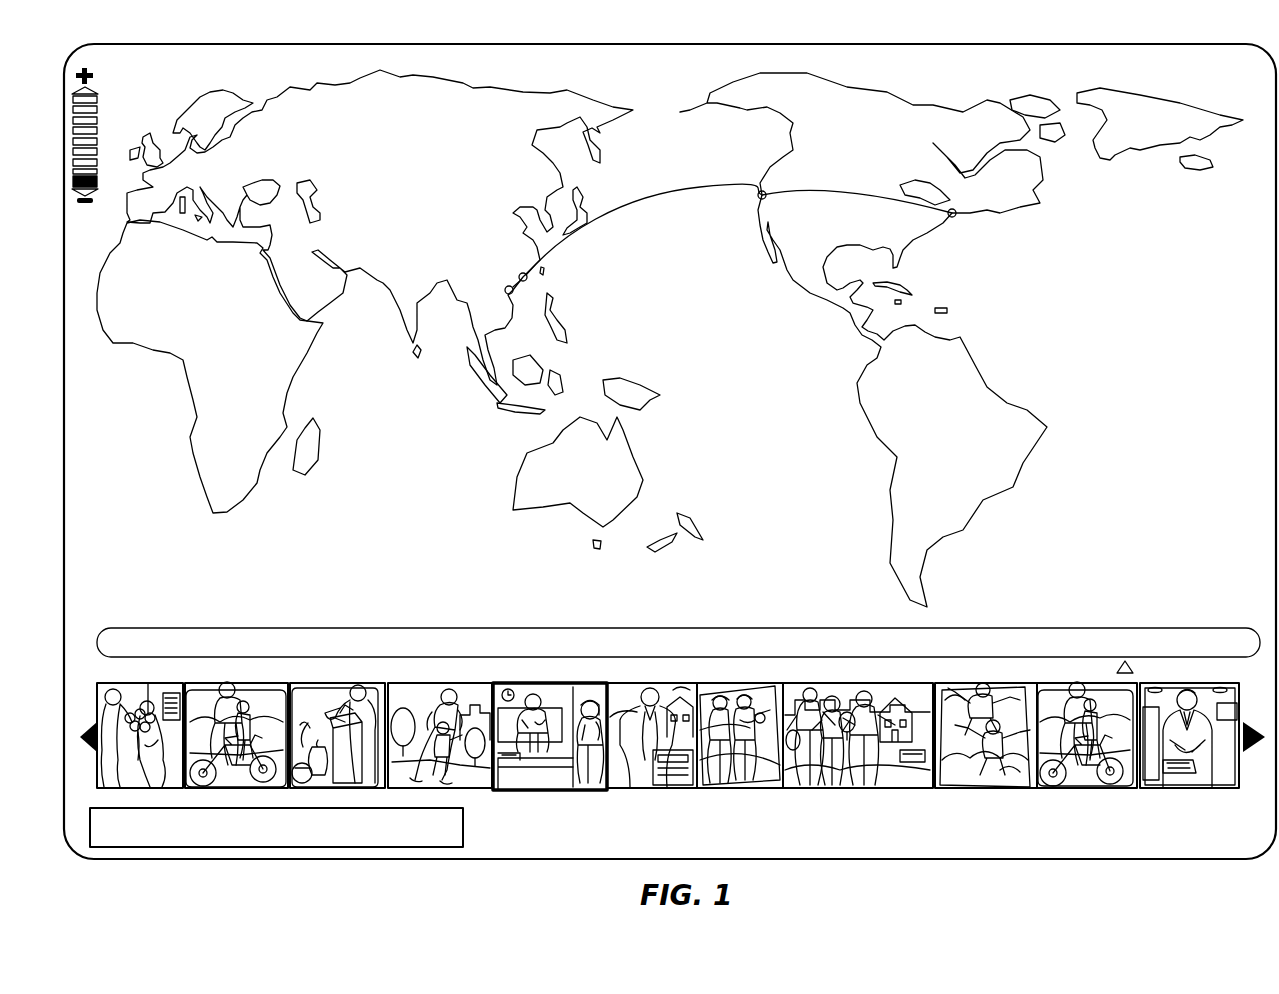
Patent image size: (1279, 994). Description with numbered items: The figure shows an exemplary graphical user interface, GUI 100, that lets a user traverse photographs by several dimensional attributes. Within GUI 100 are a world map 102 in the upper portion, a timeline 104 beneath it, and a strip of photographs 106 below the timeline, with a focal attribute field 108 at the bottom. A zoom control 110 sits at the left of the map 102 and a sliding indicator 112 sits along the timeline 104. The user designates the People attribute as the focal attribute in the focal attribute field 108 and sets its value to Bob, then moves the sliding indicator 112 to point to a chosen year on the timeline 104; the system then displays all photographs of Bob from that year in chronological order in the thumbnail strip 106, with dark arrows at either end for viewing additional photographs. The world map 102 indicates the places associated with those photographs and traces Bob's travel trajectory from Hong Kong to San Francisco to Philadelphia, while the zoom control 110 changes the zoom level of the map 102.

The graphical user interface 100 is at (1234, 71).
The world map 102 is at (1047, 427).
The timeline 104 is at (1138, 628).
The strip of photographs 106 is at (575, 790).
The focal attribute field 108 is at (463, 830).
The zoom control 110 is at (100, 87).
The sliding indicator 112 is at (1135, 673).